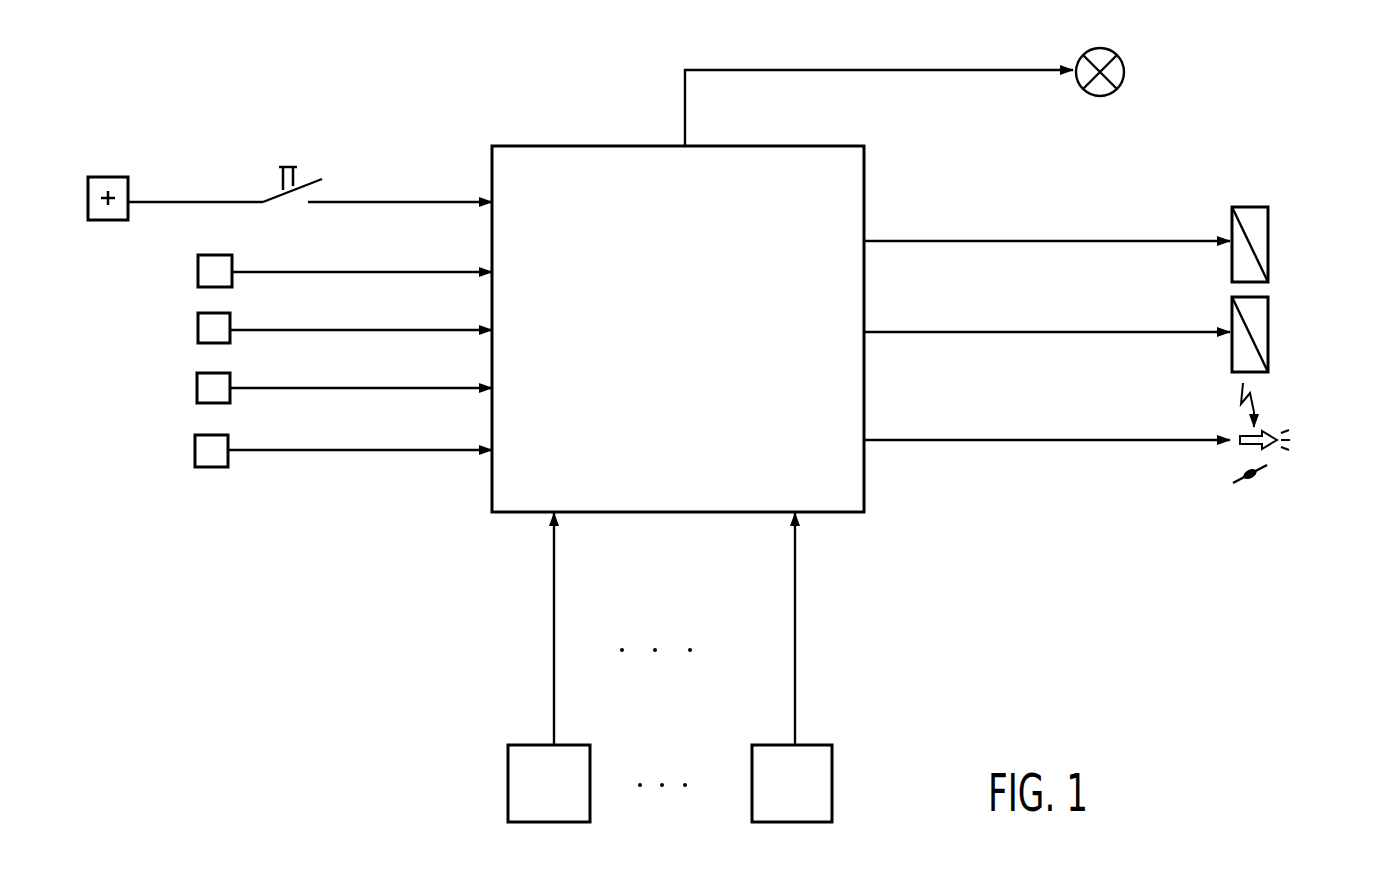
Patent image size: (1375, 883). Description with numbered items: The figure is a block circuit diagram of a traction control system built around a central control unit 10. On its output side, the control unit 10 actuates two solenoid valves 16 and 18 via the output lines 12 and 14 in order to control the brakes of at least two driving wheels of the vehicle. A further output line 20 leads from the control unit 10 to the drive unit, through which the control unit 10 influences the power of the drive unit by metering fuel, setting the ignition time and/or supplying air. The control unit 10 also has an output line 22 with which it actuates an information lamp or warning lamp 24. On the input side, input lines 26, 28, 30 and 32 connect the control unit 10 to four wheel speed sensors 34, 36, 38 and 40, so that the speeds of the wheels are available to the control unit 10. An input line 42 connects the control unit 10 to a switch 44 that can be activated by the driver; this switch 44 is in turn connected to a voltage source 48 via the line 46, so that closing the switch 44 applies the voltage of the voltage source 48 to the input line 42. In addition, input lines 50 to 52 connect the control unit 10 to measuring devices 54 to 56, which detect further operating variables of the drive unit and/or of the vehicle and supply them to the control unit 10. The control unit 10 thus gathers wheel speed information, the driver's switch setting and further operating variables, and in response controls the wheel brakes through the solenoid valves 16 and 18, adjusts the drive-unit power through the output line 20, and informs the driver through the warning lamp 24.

The control unit 10 is at (866, 149).
The output line 12 is at (1051, 239).
The output line 14 is at (1051, 330).
The solenoid valve 16 is at (1262, 212).
The solenoid valve 18 is at (1260, 302).
The output line 20 is at (1051, 442).
The output line 22 is at (878, 68).
The warning lamp 24 is at (1122, 50).
The input line 26 is at (355, 270).
The input line 28 is at (357, 328).
The input line 30 is at (357, 386).
The input line 32 is at (357, 448).
The wheel speed sensor 34 is at (232, 258).
The wheel speed sensor 36 is at (231, 315).
The wheel speed sensor 38 is at (230, 375).
The wheel speed sensor 40 is at (228, 437).
The input line 42 is at (413, 200).
The switch 44 is at (303, 154).
The line 46 is at (213, 200).
The voltage source 48 is at (127, 170).
The input line 50 is at (553, 607).
The input line 52 is at (796, 615).
The measuring device 54 is at (580, 752).
The measuring device 56 is at (822, 754).